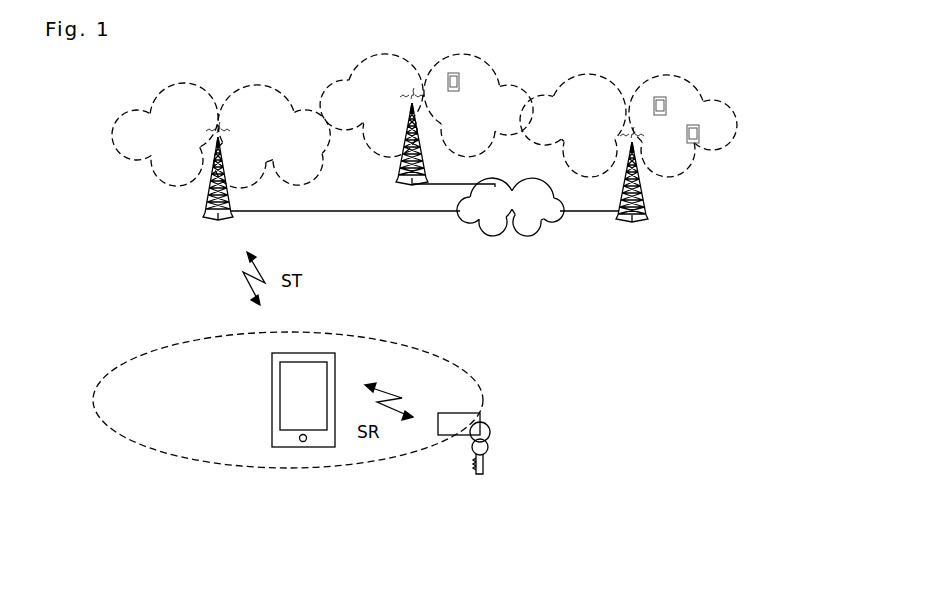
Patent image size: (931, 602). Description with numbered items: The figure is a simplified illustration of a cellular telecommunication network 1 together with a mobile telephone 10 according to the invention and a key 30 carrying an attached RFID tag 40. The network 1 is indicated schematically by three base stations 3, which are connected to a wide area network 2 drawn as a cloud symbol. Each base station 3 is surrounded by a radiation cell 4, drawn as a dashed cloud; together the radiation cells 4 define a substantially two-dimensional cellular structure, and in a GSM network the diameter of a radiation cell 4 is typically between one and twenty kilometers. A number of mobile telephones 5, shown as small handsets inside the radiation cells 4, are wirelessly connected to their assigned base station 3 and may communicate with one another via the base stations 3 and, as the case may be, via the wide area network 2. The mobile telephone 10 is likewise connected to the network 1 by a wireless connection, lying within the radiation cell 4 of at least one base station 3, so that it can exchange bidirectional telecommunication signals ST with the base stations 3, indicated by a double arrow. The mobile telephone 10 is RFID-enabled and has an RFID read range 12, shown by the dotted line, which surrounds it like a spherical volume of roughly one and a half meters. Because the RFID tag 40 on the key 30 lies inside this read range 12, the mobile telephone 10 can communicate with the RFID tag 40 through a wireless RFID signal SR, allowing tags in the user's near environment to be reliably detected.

The cellular telecommunication network 1 is at (731, 261).
The wide area network 2 is at (528, 230).
The base station 3 is at (207, 202).
The radiation cell 4 is at (237, 112).
The mobile telephone 5 is at (700, 132).
The mobile telephone 10 is at (275, 422).
The RFID read range 12 is at (418, 352).
The key 30 is at (490, 452).
The RFID tag 40 is at (453, 423).